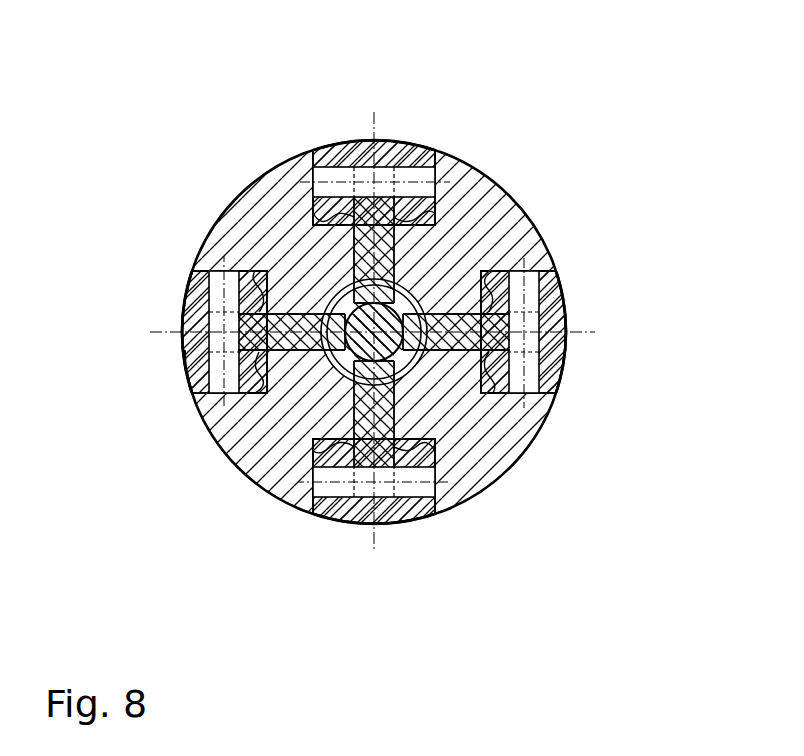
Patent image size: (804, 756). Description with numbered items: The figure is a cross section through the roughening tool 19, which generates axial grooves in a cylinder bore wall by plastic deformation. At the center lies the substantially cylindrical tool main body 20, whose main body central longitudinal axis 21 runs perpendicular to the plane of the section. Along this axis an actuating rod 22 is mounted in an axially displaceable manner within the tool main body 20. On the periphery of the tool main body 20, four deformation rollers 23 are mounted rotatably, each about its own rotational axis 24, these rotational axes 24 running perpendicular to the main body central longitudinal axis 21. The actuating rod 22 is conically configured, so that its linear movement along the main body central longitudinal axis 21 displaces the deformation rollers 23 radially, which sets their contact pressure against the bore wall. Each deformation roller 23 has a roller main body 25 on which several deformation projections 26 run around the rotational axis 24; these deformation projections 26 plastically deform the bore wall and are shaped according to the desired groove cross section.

The roughening tool 19 is at (360, 320).
The tool main body 20 is at (232, 213).
The main body central longitudinal axis 21 is at (428, 374).
The actuating rod 22 is at (432, 282).
The deformation roller 23 is at (416, 137).
The rotational axis 24 is at (305, 180).
The roller main body 25 is at (193, 363).
The deformation projection 26 is at (187, 289).